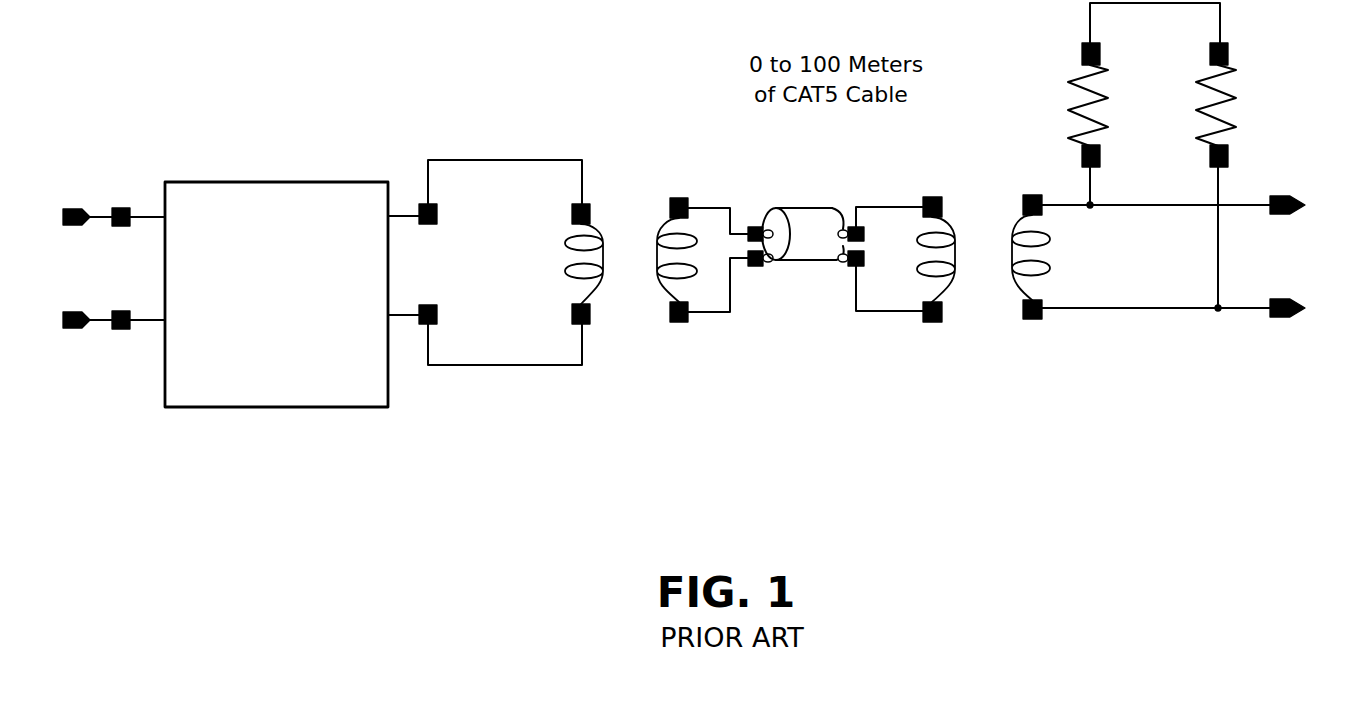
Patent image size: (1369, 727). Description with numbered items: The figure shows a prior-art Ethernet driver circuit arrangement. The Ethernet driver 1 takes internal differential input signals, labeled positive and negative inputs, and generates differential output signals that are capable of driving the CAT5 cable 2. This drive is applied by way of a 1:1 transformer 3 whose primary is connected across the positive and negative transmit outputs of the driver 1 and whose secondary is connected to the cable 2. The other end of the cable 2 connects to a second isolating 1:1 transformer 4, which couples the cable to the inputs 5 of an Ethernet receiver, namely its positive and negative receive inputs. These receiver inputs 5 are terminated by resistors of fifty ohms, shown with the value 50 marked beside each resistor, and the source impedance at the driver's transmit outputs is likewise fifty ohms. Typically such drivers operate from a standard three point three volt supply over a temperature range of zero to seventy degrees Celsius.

The Ethernet driver 1 is at (337, 191).
The CAT5 cable 2 is at (803, 268).
The 1:1 transformer 3 is at (626, 205).
The second isolating 1:1 transformer 4 is at (985, 310).
The inputs to an Ethernet receiver 5 is at (1252, 314).
The 50 ohm termination resistors 50 is at (1170, 85).